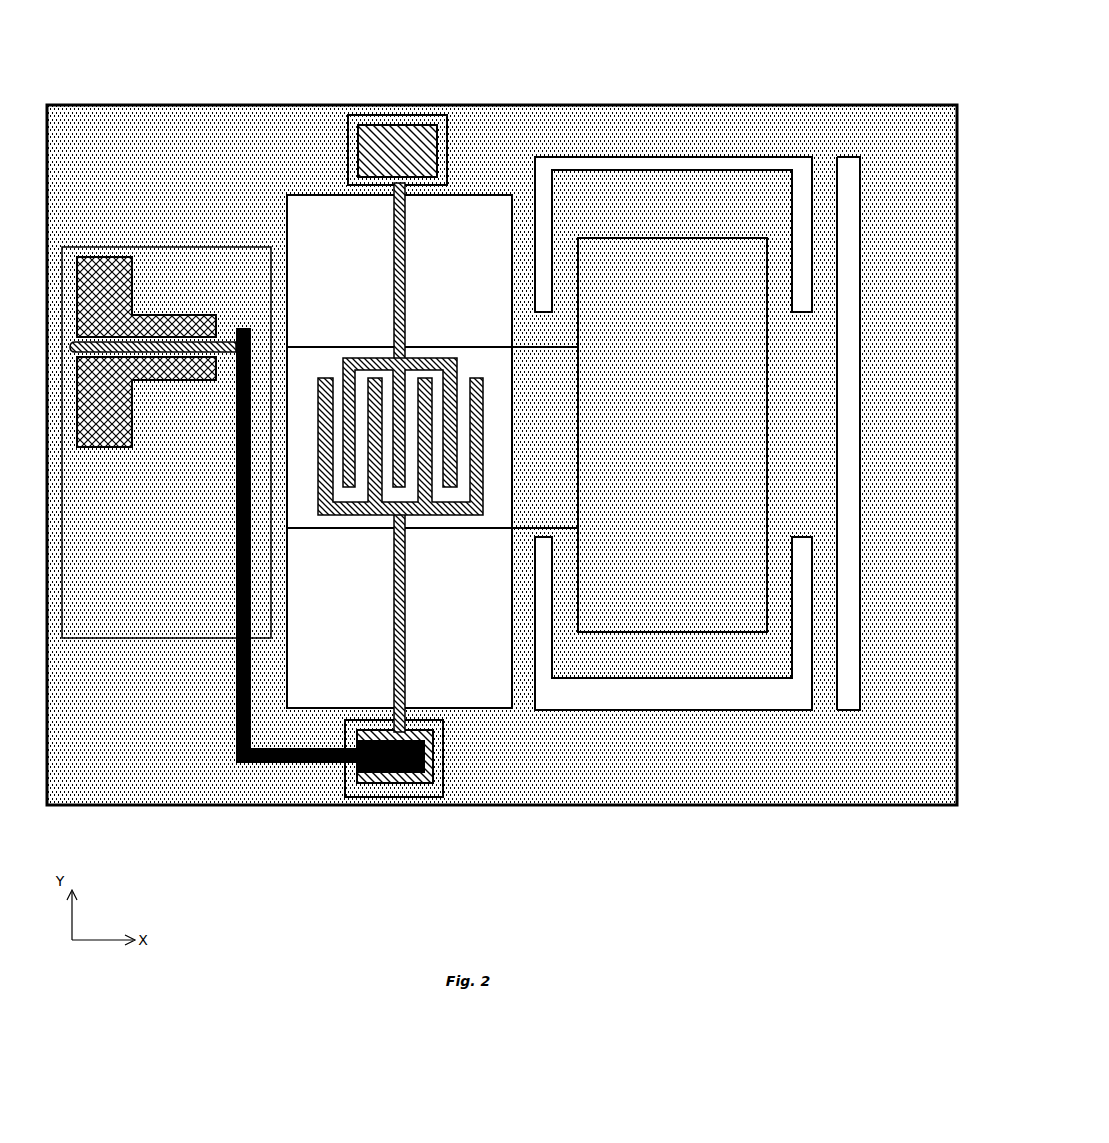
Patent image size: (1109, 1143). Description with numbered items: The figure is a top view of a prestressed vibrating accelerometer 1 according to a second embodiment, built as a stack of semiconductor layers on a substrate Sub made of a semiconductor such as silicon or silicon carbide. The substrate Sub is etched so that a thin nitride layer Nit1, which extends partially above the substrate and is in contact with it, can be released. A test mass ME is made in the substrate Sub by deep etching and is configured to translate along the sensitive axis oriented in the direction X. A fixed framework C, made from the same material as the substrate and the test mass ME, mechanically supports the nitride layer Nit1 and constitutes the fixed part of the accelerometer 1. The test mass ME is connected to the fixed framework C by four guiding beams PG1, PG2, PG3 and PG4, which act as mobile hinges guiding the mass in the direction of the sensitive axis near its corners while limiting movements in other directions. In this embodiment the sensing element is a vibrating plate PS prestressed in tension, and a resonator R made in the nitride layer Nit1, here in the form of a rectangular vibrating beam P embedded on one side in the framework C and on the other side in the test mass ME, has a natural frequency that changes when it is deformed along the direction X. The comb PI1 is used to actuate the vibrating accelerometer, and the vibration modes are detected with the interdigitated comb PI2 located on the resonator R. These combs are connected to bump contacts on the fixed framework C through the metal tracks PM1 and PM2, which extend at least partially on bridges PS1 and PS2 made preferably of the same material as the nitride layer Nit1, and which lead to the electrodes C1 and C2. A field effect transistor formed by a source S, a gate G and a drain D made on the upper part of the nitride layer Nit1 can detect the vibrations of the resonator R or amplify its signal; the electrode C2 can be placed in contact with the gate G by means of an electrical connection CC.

The accelerometer 1 is at (908, 72).
The source S is at (112, 252).
The substrate Sub is at (163, 135).
The gate G is at (236, 328).
The resonator R is at (287, 195).
The bridge PS1 is at (392, 262).
The electrode C1 is at (395, 116).
The metal track PM1 is at (408, 128).
The comb PI1 is at (425, 345).
The guiding beam PG1 is at (511, 193).
The vibrating beam P is at (635, 207).
The guiding beam PG2 is at (825, 175).
The drain D is at (92, 450).
The electrical connection CC is at (240, 765).
The interdigitated comb PI2 is at (290, 205).
The bridge PS2 is at (390, 667).
The metal track PM2 is at (397, 745).
The electrode C2 is at (392, 743).
The vibrating plate PS is at (477, 675).
The guiding beam PG3 is at (519, 688).
The test mass ME is at (616, 642).
The nitride layer Nit1 is at (630, 617).
The guiding beam PG4 is at (808, 530).
The fixed framework C is at (940, 806).